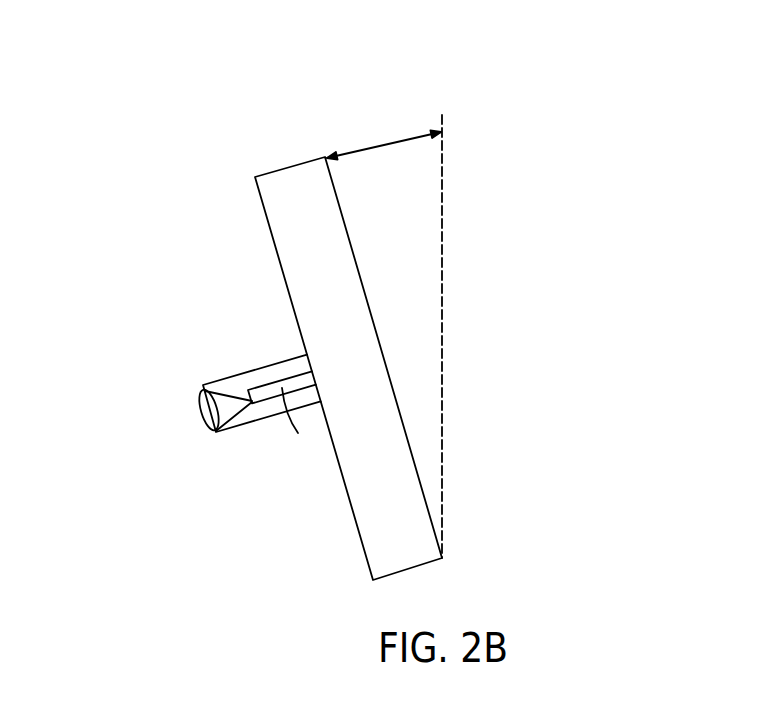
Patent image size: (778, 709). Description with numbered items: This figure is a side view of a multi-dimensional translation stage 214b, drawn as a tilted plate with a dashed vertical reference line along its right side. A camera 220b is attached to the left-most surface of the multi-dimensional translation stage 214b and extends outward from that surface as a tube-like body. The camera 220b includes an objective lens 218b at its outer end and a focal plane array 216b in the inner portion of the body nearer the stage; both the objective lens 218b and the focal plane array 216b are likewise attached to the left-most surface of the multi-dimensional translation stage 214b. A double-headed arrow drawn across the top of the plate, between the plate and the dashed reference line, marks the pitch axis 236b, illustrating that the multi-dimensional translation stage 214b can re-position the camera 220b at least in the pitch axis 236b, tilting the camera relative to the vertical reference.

The multi-dimensional translation stage 214b is at (452, 173).
The pitch axis 236b is at (410, 139).
The camera 220b is at (218, 380).
The objective lens 218b is at (212, 413).
The FPA 216b is at (252, 402).